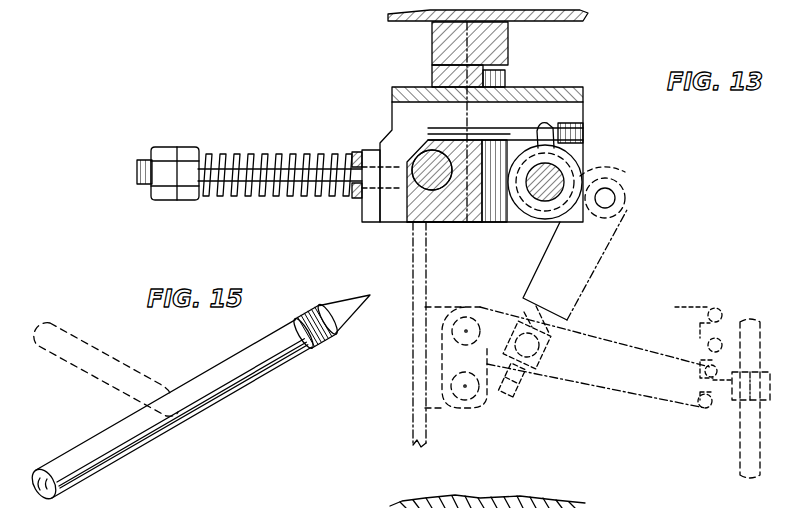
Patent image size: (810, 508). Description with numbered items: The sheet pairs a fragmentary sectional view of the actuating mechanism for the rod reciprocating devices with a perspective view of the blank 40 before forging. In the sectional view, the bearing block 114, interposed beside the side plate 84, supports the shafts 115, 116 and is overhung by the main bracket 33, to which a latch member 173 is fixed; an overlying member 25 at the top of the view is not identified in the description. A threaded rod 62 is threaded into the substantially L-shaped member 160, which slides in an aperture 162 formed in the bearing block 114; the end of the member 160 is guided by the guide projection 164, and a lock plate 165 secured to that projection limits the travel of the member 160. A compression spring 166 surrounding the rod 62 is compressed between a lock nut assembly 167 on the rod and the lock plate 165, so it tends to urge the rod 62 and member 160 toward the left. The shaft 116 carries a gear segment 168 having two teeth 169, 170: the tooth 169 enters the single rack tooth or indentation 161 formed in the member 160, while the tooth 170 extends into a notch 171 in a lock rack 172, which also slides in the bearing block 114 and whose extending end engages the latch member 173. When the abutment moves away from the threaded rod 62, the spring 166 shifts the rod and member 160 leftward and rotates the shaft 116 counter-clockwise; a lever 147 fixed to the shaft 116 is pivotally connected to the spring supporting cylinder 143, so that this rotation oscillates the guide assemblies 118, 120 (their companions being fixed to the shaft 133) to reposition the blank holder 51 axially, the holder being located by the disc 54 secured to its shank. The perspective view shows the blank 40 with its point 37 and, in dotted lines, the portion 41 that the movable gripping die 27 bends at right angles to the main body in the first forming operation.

In FIG. 13, the mounting plate 25 is at (562, 21).
In FIG. 13, the main bracket 33 is at (432, 40).
In FIG. 13, the latch member 173 is at (432, 73).
In FIG. 13, the lock rack 172 is at (503, 79).
In FIG. 13, the aperture 162 is at (516, 104).
In FIG. 13, the L-shaped member 160 is at (423, 122).
In FIG. 13, the guide projection 164 is at (362, 207).
In FIG. 13, the lock plate 165 is at (360, 152).
In FIG. 13, the compression spring 166 is at (220, 197).
In FIG. 13, the lock nut assembly 167 is at (186, 149).
In FIG. 13, the threaded rod 62 is at (143, 160).
In FIG. 13, the tooth 170 is at (471, 222).
In FIG. 13, the bearing block 114 is at (438, 186).
In FIG. 13, the shaft 115 is at (430, 212).
In FIG. 13, the notch 171 is at (517, 218).
In FIG. 13, the shaft 116 is at (566, 152).
In FIG. 13, the rack tooth or indentation 161 is at (586, 126).
In FIG. 13, the gear segment 168 is at (583, 168).
In FIG. 13, the tooth 169 is at (586, 114).
In FIG. 13, the lever 147 is at (612, 172).
In FIG. 13, the spring supporting cylinder 143 is at (600, 262).
In FIG. 13, the shaft 133 is at (466, 318).
In FIG. 13, the side plate 84 is at (428, 430).
In FIG. 13, the guide assembly 118 is at (679, 356).
In FIG. 13, the guide assembly 120 is at (630, 400).
In FIG. 13, the disc 54 is at (737, 404).
In FIG. 13, the blank holder 51 is at (740, 455).
In FIG. 13, the movable gripping die 27 is at (455, 501).
In FIG. 15, the blank 40 is at (269, 385).
In FIG. 15, the bent-over portion 41 is at (108, 354).
In FIG. 15, the point 37 is at (368, 306).